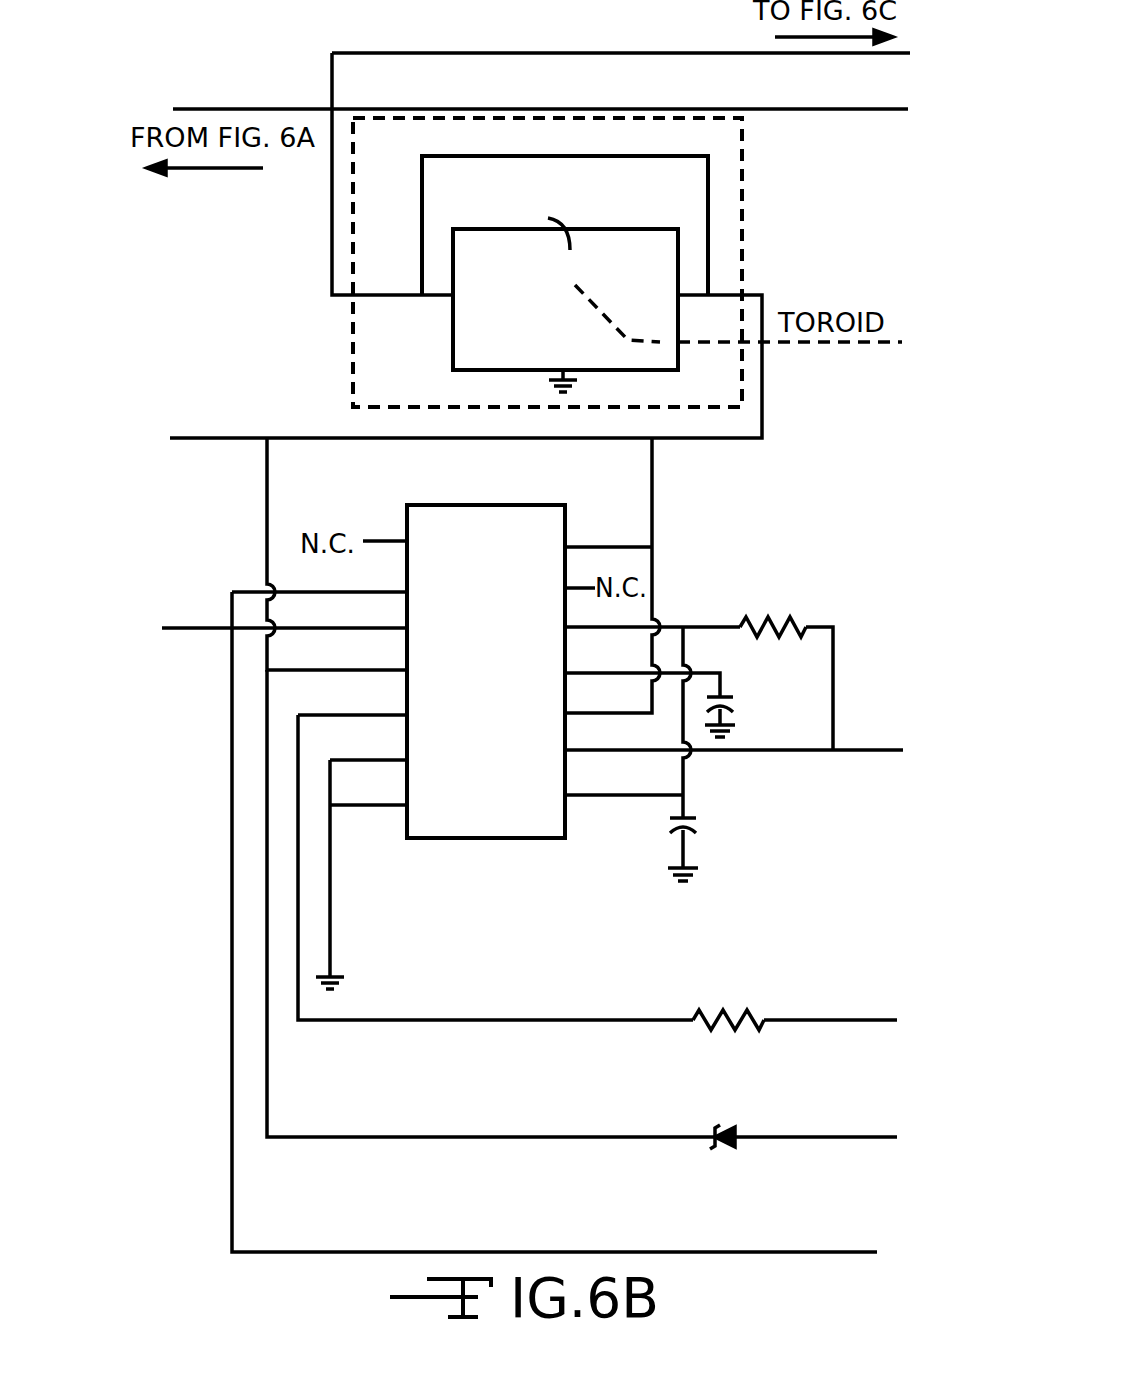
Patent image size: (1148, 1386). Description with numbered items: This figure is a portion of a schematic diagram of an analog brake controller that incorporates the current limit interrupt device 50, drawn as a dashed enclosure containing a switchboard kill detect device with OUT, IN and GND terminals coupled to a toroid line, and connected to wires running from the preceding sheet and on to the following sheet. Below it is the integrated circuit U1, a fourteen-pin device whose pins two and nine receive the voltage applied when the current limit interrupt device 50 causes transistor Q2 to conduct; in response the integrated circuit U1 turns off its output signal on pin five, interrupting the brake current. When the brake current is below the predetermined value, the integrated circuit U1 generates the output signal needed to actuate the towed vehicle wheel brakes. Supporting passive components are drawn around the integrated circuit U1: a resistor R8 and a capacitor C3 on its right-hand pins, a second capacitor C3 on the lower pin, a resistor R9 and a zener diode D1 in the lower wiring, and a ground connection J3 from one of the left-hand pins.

The current limit interrupt device 50 is at (727, 192).
The integrated circuit U1 is at (491, 671).
The resistor R8 is at (773, 643).
The resistor R9 is at (728, 1033).
The capacitor C3 is at (725, 785).
The zener diode D1 is at (721, 1154).
The ground jumper J3 is at (361, 874).